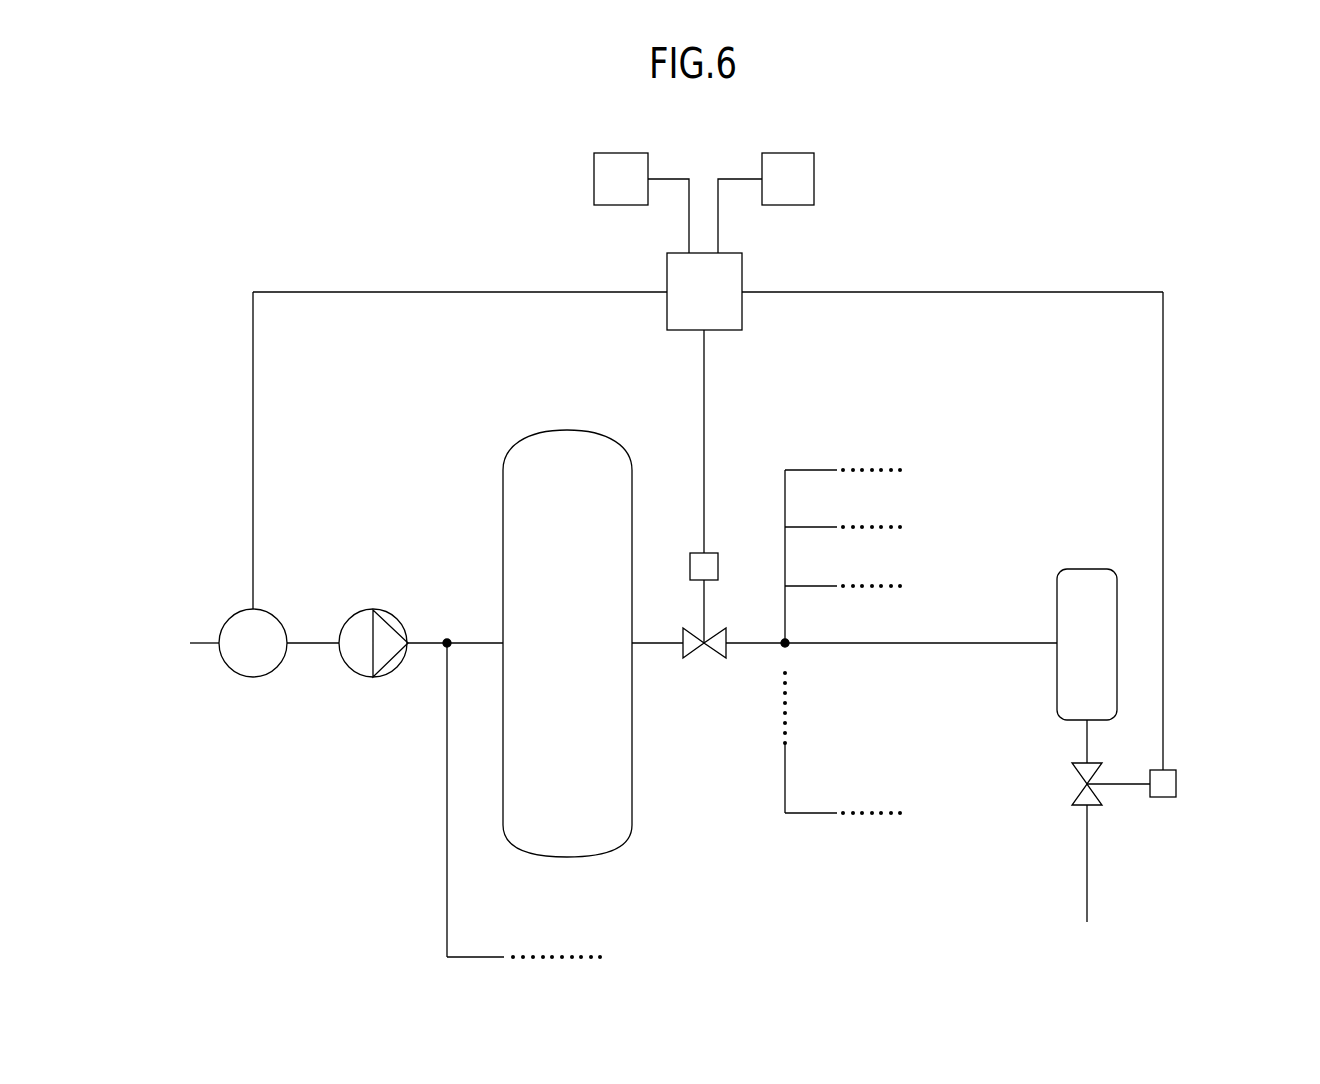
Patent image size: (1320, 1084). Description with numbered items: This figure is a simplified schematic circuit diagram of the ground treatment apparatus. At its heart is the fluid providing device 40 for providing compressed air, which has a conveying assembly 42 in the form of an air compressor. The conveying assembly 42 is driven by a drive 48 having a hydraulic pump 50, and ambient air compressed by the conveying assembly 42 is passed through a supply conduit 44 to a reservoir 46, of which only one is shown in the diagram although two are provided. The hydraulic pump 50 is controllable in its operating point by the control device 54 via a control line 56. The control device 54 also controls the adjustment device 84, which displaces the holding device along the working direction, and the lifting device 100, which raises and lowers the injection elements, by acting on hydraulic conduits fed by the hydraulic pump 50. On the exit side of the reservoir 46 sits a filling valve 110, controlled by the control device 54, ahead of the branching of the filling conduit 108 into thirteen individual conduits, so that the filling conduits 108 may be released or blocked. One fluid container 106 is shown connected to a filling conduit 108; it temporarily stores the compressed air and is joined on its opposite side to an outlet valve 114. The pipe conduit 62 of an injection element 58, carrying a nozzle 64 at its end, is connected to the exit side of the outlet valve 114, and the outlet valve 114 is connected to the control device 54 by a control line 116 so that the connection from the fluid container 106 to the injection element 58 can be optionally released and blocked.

The fluid providing device 40 is at (510, 664).
The conveying assembly 42 is at (365, 662).
The supply conduit 44 is at (473, 643).
The reservoir 46 is at (570, 838).
The drive 48 is at (239, 682).
The hydraulic pump 50 is at (250, 662).
The control device 54 is at (719, 307).
The control line 56 is at (410, 291).
The injection element 58 is at (1085, 877).
The pipe conduit 62 is at (1090, 863).
The nozzle 64 is at (1087, 922).
The adjustment device 84 is at (610, 180).
The lifting device 100 is at (802, 180).
The fluid container 106 is at (1087, 590).
The filling conduit 108 is at (750, 646).
The filling valve 110 is at (693, 650).
The outlet valve 114 is at (1075, 787).
The control line 116 is at (1163, 455).